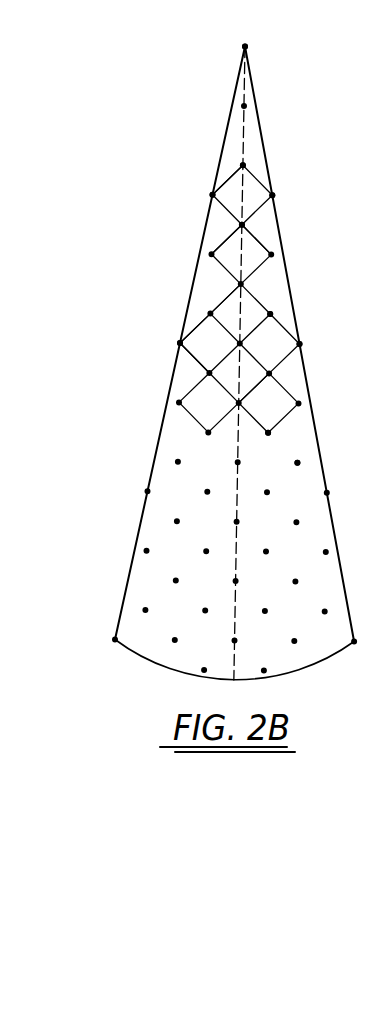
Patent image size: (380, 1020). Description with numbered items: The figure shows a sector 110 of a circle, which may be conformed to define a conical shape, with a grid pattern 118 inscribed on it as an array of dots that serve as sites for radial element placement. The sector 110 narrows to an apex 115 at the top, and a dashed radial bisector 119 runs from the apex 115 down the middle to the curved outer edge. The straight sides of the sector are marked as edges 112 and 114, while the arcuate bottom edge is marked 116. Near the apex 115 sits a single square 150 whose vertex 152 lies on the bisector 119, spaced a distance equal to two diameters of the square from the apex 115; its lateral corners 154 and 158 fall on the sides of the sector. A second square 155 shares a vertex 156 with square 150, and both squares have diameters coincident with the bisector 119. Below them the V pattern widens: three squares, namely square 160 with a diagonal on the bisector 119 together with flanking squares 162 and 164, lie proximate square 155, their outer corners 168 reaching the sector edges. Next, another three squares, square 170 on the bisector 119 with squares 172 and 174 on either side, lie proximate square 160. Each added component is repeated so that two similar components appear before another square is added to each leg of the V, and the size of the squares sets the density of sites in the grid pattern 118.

The sector 110 is at (234, 367).
The left side edge of panel 112 is at (163, 422).
The right side edge of panel 114 is at (313, 312).
The apex 115 is at (247, 46).
The arcuate bottom edge 116 is at (333, 654).
The grid pattern 118 is at (300, 463).
The radial bisector 119 is at (243, 423).
The square 150 is at (227, 180).
The vertex 152 is at (245, 165).
The left edge node 154 is at (211, 194).
The square 155 is at (222, 236).
The vertex 156 is at (246, 225).
The right edge node 158 is at (274, 195).
The square 160 is at (217, 302).
The square 162 is at (193, 332).
The square 164 is at (277, 312).
The edge nodes 168 is at (180, 344).
The square 170 is at (256, 390).
The square 172 is at (180, 372).
The square 174 is at (270, 433).